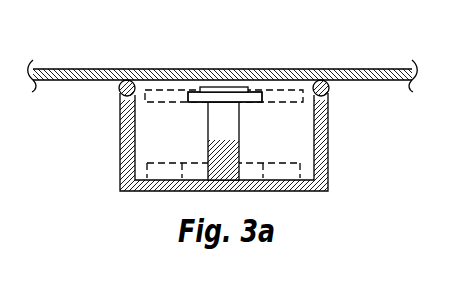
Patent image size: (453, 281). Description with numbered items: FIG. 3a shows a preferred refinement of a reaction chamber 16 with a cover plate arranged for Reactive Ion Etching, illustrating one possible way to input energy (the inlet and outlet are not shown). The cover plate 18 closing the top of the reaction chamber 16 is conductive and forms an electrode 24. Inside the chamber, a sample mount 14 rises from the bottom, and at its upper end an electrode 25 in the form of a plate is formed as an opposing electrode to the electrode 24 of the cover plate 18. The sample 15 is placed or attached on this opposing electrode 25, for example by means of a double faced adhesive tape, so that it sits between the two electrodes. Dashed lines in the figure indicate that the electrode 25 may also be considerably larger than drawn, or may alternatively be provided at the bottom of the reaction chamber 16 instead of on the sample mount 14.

The sample mount 14 is at (225, 140).
The sample 15 is at (215, 87).
The reaction chamber 16 is at (322, 160).
The cover plate 18 is at (233, 80).
The electrode 24 is at (265, 68).
The electrode 25 is at (200, 102).